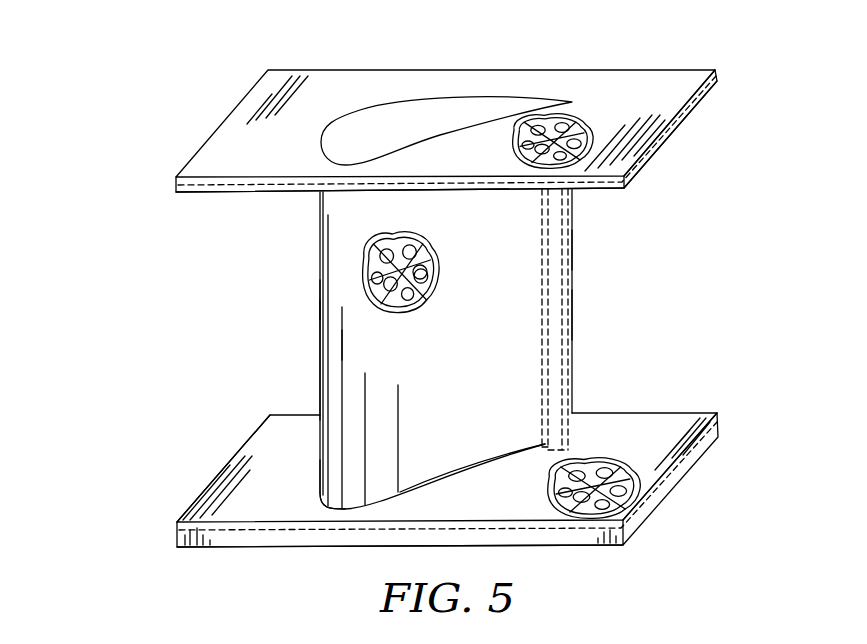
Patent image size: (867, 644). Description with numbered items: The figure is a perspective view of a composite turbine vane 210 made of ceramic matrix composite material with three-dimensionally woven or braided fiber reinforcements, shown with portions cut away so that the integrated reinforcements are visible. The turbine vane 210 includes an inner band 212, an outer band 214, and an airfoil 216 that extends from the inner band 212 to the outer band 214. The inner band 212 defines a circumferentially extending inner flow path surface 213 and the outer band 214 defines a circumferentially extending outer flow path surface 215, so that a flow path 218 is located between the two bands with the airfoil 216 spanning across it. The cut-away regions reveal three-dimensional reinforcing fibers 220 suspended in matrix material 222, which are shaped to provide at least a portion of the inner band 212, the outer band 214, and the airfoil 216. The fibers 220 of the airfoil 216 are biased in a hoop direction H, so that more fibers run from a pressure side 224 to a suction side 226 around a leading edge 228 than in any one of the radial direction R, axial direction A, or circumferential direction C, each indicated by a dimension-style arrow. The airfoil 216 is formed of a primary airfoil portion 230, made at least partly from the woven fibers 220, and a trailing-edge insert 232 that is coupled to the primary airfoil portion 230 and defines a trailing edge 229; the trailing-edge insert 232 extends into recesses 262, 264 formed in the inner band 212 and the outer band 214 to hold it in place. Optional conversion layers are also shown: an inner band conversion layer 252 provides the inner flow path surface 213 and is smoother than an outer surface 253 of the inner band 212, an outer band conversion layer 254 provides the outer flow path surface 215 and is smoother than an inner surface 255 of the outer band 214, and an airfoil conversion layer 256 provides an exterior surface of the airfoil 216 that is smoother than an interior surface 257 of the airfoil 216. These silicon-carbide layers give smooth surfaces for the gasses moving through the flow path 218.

The turbine vane 210 is at (119, 167).
The inner band 212 is at (138, 535).
The inner flow path surface 213 is at (657, 437).
The outer band 214 is at (211, 111).
The outer flow path surface 215 is at (673, 118).
The airfoil 216 is at (259, 258).
The flow path 218 is at (171, 341).
The three-dimensional reinforcing fibers 220 is at (400, 229).
The matrix material 222 is at (430, 241).
The pressure side 224 is at (457, 448).
The suction side 226 is at (304, 302).
The leading edge 228 is at (328, 481).
The trailing edge 229 is at (573, 313).
The primary airfoil portion 230 is at (523, 257).
The trailing-edge insert 232 is at (587, 249).
The inner band conversion layer 252 is at (229, 509).
The outer surface of the inner band 253 is at (560, 548).
The outer band conversion layer 254 is at (232, 206).
The inner surface of the outer band 255 is at (612, 77).
The airfoil conversion layer 256 is at (356, 323).
The interior surface of the airfoil 257 is at (403, 113).
The recess in the inner band 262 is at (585, 424).
The recess in the outer band 264 is at (530, 200).
The hoop direction H is at (411, 348).
The radial direction R is at (763, 95).
The circumferential direction C is at (459, 558).
The axial direction A is at (632, 550).